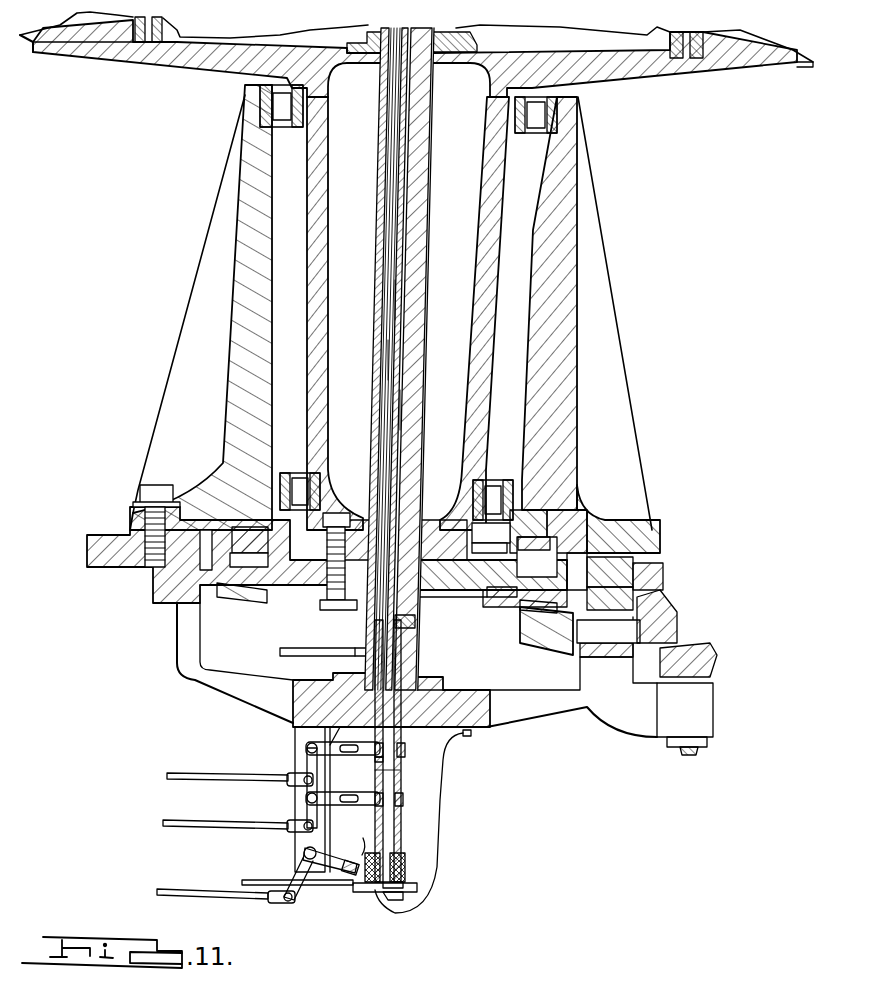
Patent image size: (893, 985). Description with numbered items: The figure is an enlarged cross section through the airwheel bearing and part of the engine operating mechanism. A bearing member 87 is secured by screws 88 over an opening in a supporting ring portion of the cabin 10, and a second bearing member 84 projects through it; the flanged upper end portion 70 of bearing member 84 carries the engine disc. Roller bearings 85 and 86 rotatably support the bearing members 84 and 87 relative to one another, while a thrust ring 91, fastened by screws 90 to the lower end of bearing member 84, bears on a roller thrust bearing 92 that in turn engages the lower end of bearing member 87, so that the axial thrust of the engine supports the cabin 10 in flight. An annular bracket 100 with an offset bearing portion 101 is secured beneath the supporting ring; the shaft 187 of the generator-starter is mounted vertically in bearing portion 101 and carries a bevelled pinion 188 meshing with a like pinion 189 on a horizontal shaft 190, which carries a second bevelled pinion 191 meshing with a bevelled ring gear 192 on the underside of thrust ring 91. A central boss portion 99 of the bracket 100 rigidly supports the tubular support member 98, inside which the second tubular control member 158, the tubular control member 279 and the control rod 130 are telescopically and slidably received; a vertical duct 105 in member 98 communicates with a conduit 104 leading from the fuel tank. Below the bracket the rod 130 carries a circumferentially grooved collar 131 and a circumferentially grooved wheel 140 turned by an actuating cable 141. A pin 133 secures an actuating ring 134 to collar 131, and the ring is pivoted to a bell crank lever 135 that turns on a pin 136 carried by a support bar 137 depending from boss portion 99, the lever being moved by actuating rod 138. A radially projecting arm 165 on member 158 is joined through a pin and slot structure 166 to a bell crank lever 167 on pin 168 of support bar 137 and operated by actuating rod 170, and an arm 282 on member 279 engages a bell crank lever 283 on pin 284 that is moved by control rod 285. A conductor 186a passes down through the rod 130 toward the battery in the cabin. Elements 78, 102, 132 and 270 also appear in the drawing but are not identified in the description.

The flanged upper end portion 70 is at (645, 78).
The plate lip 78 is at (26, 44).
The roller bearing 85 is at (545, 125).
The second tubular control member 158 is at (420, 160).
The inner cylinder wall 102 is at (381, 230).
The bearing member 84 is at (492, 247).
The tubular support member 98 is at (421, 300).
The control rod 130 is at (400, 366).
The tubular control member 279 is at (410, 412).
The bearing member 87 is at (570, 342).
The roller bearing 86 is at (500, 497).
The roller thrust bearing 92 is at (550, 543).
The screws 88 is at (140, 492).
The cabin 10 is at (650, 577).
The bevelled pinion 189 is at (670, 610).
The shaft 190 is at (680, 635).
The bevelled pinion 188 is at (707, 658).
The screws 90 is at (322, 610).
The duct 105 is at (375, 625).
The conduit 104 is at (284, 652).
The central boss portion 99 is at (455, 690).
The thrust ring 91 is at (433, 598).
The bevelled ring gear 192 is at (512, 602).
The second bevelled pinion 191 is at (545, 640).
The annular bracket 100 is at (192, 678).
The offset bearing portion 101 is at (552, 705).
The shaft 187 is at (690, 743).
The pin 168 is at (332, 735).
The support bar 137 is at (297, 737).
The bell crank lever 167 is at (300, 759).
The pin and slot structure 166 is at (367, 759).
The radially projecting arm 165 is at (356, 774).
The actuating rod 170 is at (190, 774).
The pin 284 is at (305, 798).
The bell crank lever 283 is at (305, 808).
The arm 282 is at (366, 808).
The control rod 285 is at (190, 824).
The actuating ring 134 is at (355, 839).
The bell crank lever 135 is at (343, 855).
The circumferentially grooved collar 131 is at (402, 858).
The pin 133 is at (405, 858).
The nut 132 is at (410, 875).
The pin 136 is at (303, 855).
The tube 270 is at (400, 778).
The conductor 186a is at (442, 808).
The actuating rod 138 is at (195, 892).
The actuating cable 141 is at (322, 898).
The circumferentially grooved wheel 140 is at (365, 904).